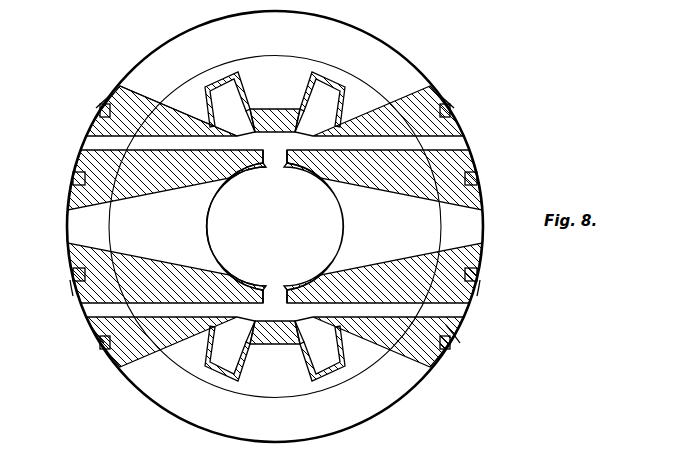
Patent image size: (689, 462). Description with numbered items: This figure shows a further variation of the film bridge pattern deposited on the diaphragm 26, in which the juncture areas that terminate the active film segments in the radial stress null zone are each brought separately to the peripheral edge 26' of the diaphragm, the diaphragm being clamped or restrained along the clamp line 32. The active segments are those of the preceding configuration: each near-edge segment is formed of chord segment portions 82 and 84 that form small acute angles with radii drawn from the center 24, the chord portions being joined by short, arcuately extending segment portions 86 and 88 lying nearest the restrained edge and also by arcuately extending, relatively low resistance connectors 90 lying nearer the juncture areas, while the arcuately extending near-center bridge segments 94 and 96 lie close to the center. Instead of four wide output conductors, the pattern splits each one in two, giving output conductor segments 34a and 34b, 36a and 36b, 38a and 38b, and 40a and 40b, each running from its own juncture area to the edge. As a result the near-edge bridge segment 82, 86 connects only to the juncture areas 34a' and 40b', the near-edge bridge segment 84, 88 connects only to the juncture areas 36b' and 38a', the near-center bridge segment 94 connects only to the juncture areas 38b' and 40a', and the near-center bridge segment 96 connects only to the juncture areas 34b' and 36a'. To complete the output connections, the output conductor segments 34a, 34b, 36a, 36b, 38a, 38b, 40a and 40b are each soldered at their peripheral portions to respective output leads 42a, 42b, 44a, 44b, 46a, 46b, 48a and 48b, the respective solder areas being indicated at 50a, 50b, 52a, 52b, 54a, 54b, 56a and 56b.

The center of the diaphragm 24 is at (273, 233).
The diaphragm 26 is at (279, 226).
The peripheral edge of the diaphragm 26' is at (275, 226).
The clamp line 32 is at (166, 90).
The output conductor segment 34a is at (388, 111).
The juncture area 34a' is at (302, 130).
The output conductor segment 34b is at (384, 185).
The juncture area 34b' is at (305, 175).
The output conductor segment 36a is at (384, 273).
The juncture area 36a' is at (304, 279).
The output conductor segment 36b is at (388, 342).
The juncture area 36b' is at (300, 323).
The output conductor segment 38a is at (161, 342).
The juncture area 38a' is at (264, 321).
The output conductor segment 38b is at (165, 269).
The juncture area 38b' is at (248, 277).
The output conductor segment 40a is at (165, 181).
The juncture area 40a' is at (248, 177).
The output conductor segment 40b is at (178, 111).
The juncture area 40b' is at (262, 131).
The output lead 42a is at (481, 95).
The output lead 42b is at (503, 176).
The output lead 44a is at (507, 274).
The output lead 44b is at (469, 337).
The output lead 46a is at (98, 340).
The output lead 46b is at (75, 297).
The output lead 48a is at (71, 199).
The output lead 48b is at (97, 105).
The solder area 50a is at (446, 105).
The solder area 50b is at (480, 182).
The solder area 52a is at (480, 282).
The solder area 52b is at (447, 352).
The solder area 54a is at (106, 352).
The solder area 54b is at (74, 275).
The solder area 56a is at (76, 178).
The solder area 56b is at (102, 112).
The chord segment portion 82 is at (236, 92).
The chord segment portion 84 is at (276, 335).
The arcuately extending segment portion 86 is at (214, 85).
The arcuately extending segment portion 88 is at (236, 385).
The low resistance connector 90 is at (273, 108).
The near-center bridge segment 94 is at (207, 227).
The near-center bridge segment 96 is at (343, 228).